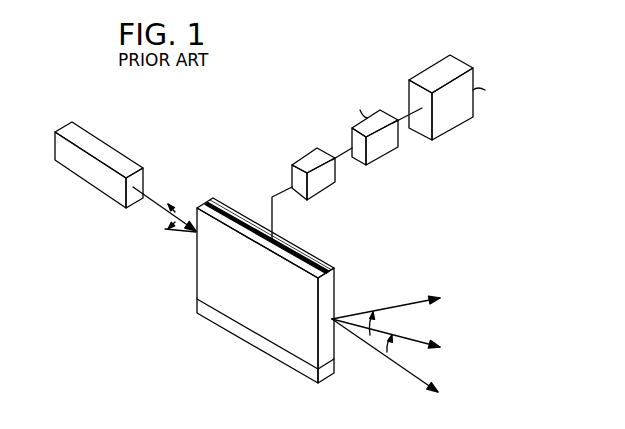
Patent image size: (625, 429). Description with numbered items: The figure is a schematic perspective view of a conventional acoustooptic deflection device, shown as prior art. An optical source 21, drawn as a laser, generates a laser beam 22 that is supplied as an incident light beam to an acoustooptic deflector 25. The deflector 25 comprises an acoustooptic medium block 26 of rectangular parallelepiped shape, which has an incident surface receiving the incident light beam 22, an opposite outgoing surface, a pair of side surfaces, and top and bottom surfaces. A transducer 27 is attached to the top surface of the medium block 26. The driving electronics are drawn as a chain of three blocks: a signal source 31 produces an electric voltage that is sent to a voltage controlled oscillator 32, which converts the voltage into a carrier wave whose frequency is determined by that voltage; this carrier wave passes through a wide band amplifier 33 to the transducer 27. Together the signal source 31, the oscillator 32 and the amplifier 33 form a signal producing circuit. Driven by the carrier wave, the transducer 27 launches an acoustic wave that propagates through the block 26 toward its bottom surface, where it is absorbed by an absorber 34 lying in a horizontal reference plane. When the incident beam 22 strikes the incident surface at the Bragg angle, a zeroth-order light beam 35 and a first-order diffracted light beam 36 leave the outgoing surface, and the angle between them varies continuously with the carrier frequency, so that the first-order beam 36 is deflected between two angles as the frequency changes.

The optical source 21 is at (87, 180).
The laser beam 22 is at (150, 205).
The acoustooptic deflector 25 is at (153, 362).
The acoustooptic medium block 26 is at (240, 308).
The transducer 27 is at (227, 210).
The signal source 31 is at (458, 127).
The voltage controlled oscillator 32 is at (387, 155).
The wide band amplifier 33 is at (325, 192).
The absorber 34 is at (255, 343).
The zeroth-order light beam 35 is at (440, 392).
The first-order diffracted light beam 36 is at (442, 298).